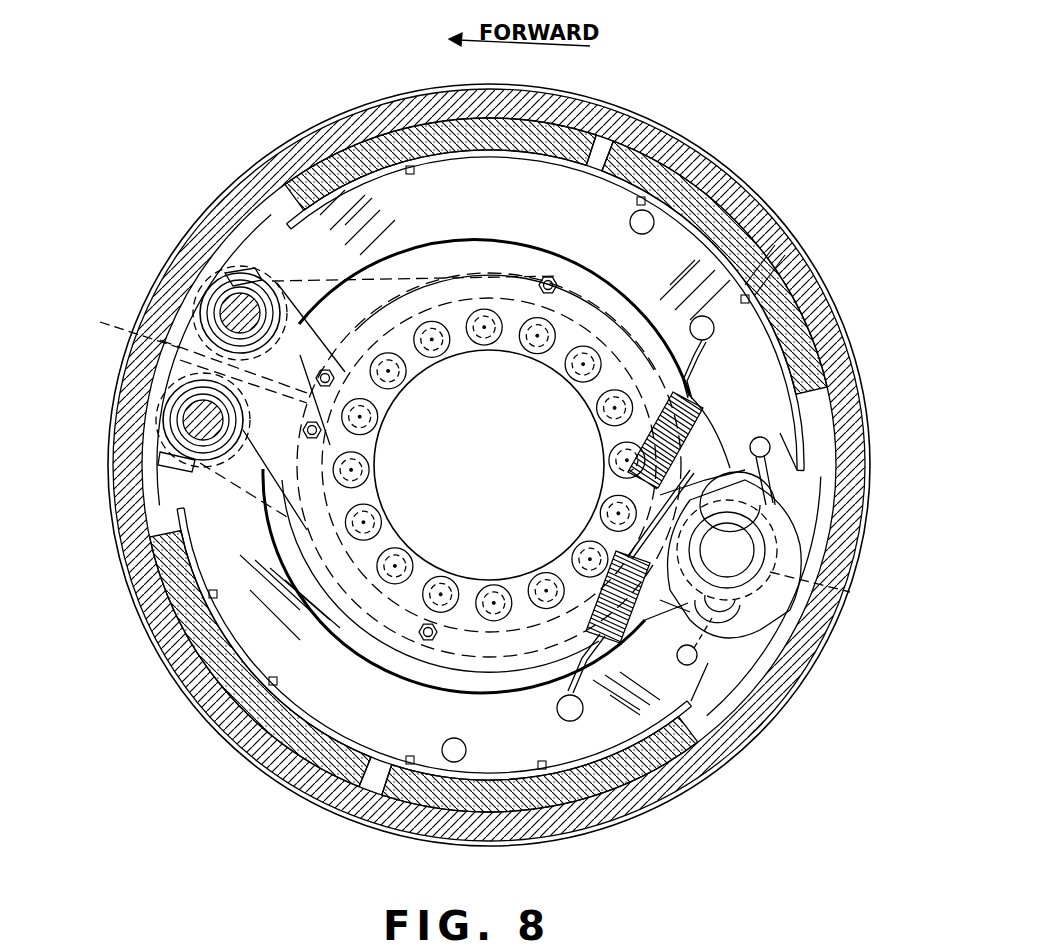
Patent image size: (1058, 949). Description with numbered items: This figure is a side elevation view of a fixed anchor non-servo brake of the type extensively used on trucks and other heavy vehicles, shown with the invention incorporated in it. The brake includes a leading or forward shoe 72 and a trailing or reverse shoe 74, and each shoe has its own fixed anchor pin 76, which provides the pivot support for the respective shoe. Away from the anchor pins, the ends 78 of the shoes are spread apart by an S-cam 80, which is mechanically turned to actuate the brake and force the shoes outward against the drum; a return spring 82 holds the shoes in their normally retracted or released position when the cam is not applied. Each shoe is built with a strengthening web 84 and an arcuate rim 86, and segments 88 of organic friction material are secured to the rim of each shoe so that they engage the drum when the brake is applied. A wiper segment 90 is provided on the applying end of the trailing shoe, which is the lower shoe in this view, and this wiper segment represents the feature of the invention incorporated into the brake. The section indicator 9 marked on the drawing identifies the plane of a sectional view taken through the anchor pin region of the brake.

The section line 9- 9 is at (108, 353).
The forward shoe 72 is at (607, 193).
The reverse shoe 74 is at (550, 753).
The fixed anchor pin 76 is at (227, 307).
The ends of the shoes 78 is at (780, 433).
The S-cam 80 is at (767, 583).
The return spring 82 is at (598, 592).
The strengthening web 84 is at (540, 285).
The arcuate rim 86 is at (522, 128).
The segments of organic friction material 88 is at (402, 142).
The wiper segment 90 is at (677, 760).